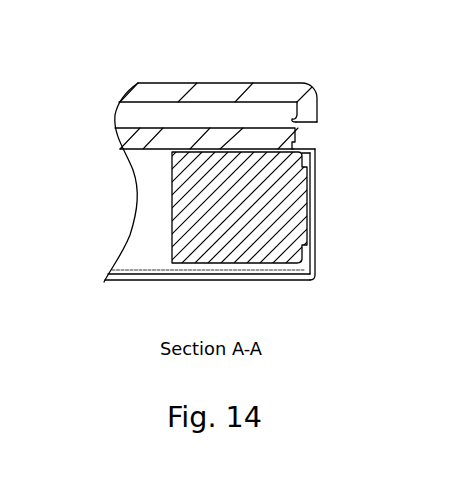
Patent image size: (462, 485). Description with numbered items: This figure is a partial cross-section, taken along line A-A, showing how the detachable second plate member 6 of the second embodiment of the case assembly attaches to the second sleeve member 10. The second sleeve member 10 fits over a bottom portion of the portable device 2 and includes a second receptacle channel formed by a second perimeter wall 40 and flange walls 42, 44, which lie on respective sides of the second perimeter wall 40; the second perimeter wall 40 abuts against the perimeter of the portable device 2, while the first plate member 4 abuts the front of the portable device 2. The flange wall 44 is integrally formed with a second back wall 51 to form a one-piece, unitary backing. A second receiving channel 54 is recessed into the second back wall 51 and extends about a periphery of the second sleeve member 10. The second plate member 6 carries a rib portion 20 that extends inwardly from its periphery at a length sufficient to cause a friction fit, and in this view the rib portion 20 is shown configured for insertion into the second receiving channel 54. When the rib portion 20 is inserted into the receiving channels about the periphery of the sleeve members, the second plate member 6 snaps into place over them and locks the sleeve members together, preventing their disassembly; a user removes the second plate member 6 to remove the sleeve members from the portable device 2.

The portable device 2 is at (210, 198).
The first plate member 4 is at (132, 282).
The second plate member 6 is at (298, 85).
The second sleeve member 10 is at (321, 210).
The rib portion 20 is at (297, 115).
The second perimeter wall 40 is at (315, 184).
The flange wall 42 is at (263, 280).
The flange wall 44 is at (311, 140).
The second back wall 51 is at (163, 133).
The second receiving channel 54 is at (292, 147).